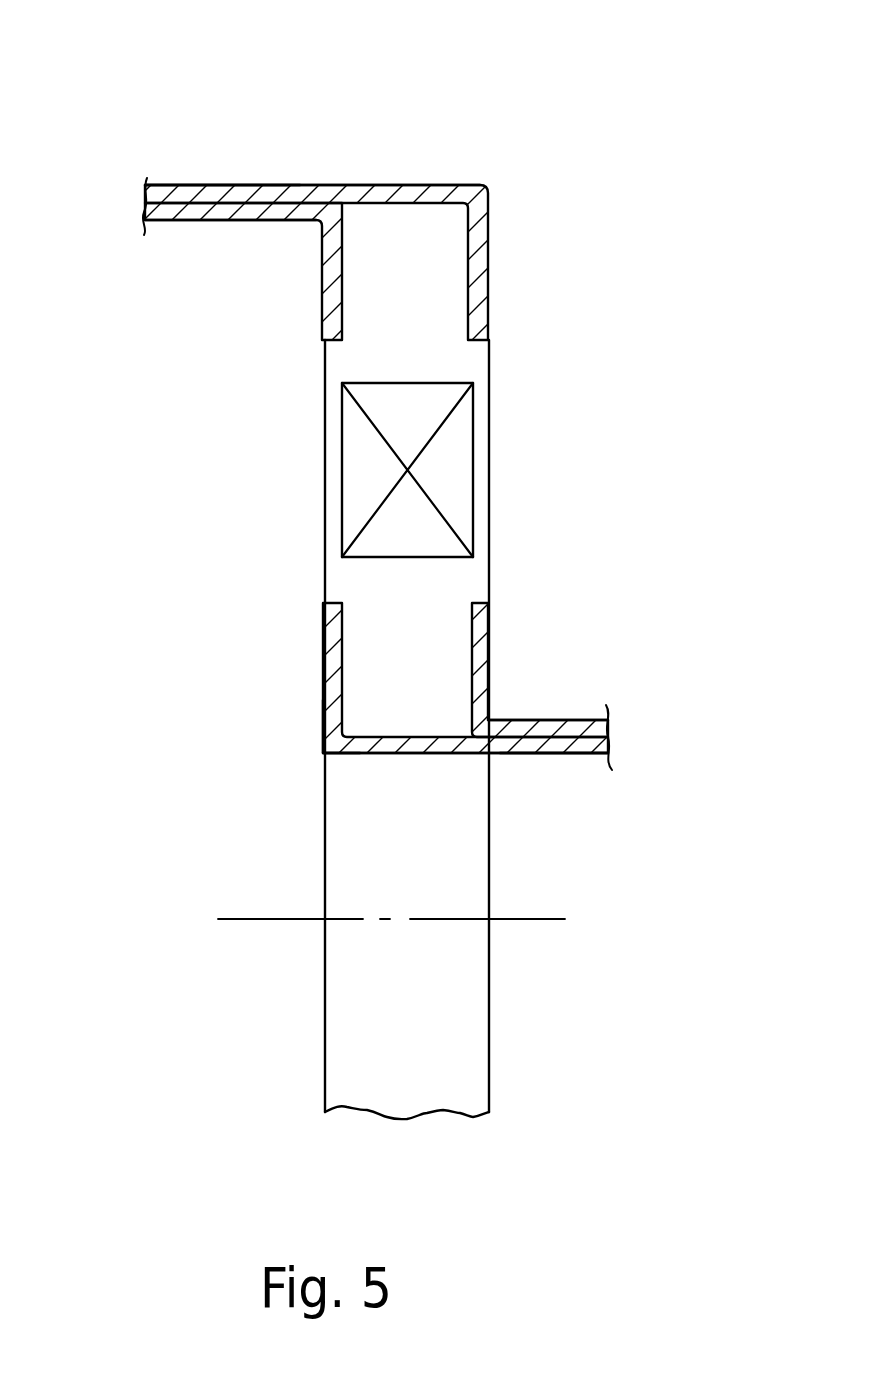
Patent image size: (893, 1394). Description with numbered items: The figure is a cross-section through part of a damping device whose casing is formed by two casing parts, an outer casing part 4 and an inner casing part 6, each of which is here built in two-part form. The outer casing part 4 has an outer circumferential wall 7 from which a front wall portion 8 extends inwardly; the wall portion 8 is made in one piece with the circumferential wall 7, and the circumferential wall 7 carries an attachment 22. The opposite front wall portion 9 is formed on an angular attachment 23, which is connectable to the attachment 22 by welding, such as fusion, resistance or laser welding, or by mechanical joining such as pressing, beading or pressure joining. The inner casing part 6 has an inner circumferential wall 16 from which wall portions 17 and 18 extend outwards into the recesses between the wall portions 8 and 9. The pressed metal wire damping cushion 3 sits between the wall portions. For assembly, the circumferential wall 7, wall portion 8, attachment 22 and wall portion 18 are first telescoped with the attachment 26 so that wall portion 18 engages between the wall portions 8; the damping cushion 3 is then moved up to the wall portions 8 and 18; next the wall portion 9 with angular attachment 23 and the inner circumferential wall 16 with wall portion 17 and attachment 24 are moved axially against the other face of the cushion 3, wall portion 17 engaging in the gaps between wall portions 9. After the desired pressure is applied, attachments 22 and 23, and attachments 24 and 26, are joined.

The damping cushion 3 is at (357, 486).
The outer casing part 4 is at (440, 160).
The inner casing part 6 is at (310, 764).
The outer circumferential wall 7 is at (370, 185).
The front wall portion 8 is at (490, 297).
The front wall portion 9 is at (322, 284).
The inner circumferential wall 16 is at (418, 755).
The wall portion 17 is at (330, 680).
The wall portion 18 is at (482, 650).
The attachment 22 is at (176, 185).
The angular attachment 23 is at (186, 222).
The attachment 24 is at (562, 755).
The attachment 26 is at (557, 718).